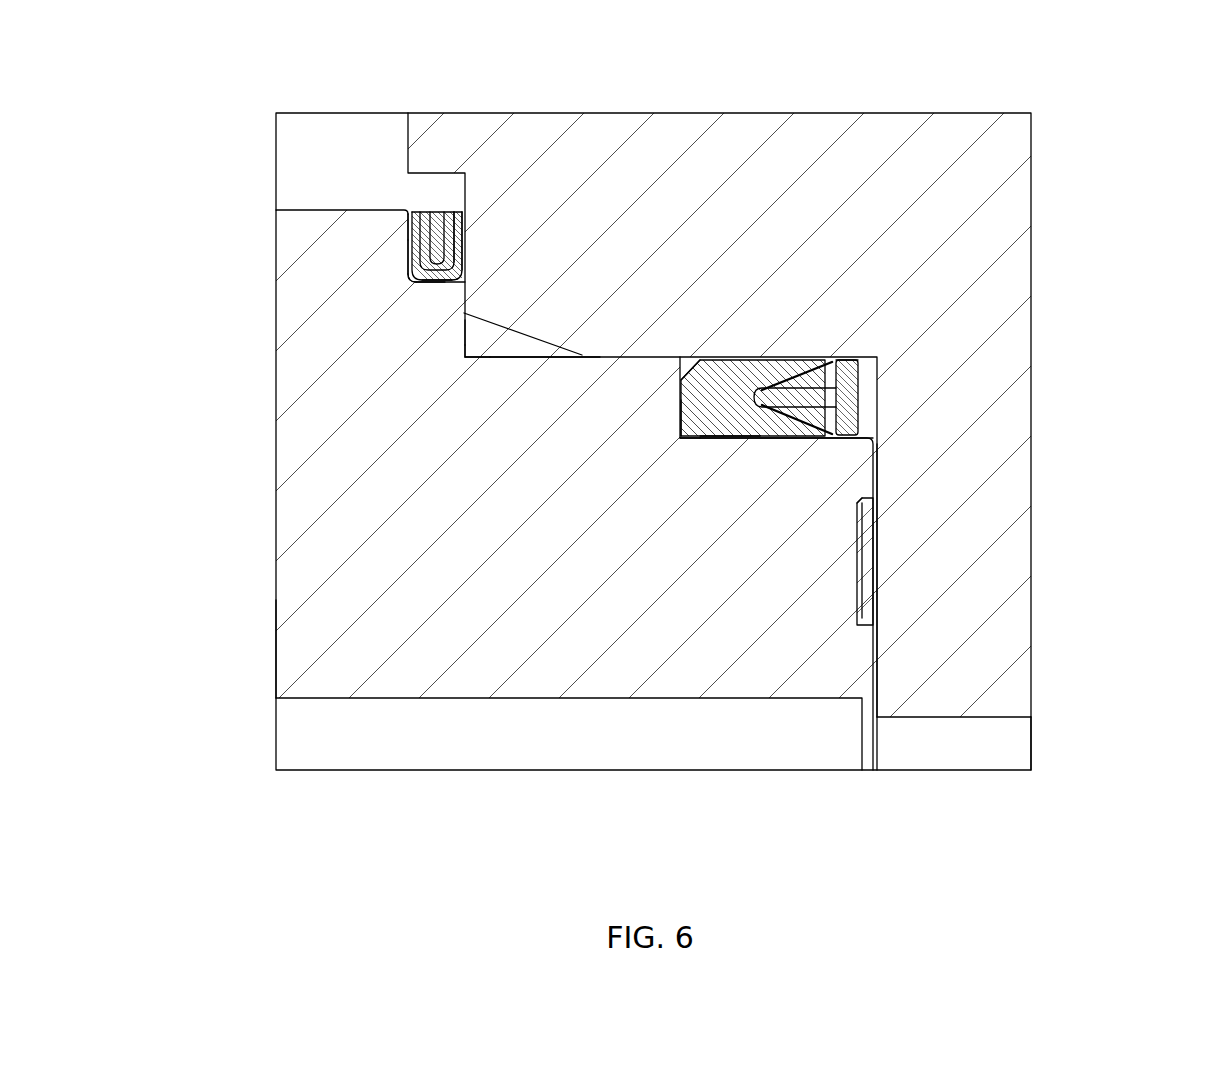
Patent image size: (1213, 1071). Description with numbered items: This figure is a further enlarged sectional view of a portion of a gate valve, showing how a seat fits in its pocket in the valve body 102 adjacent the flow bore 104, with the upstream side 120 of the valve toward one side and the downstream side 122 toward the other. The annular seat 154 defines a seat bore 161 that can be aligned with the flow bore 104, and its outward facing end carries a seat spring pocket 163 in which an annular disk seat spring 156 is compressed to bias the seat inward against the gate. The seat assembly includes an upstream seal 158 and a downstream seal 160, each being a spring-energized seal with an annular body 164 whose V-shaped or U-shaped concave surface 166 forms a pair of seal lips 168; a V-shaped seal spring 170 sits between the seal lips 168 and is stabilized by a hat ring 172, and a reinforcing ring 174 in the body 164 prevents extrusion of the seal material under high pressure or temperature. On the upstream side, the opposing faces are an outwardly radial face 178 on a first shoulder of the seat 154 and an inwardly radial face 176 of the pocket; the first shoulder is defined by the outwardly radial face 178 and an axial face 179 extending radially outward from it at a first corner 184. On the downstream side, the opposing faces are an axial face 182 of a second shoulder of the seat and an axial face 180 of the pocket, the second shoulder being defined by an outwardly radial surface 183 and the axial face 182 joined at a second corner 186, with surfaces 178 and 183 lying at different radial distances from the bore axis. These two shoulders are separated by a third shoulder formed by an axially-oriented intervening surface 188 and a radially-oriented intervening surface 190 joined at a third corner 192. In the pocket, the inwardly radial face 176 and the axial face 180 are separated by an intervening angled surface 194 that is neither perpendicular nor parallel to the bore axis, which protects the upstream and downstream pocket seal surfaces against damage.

The valve body 102 is at (1005, 597).
The flow bore 104 is at (965, 725).
The upstream side 120 is at (262, 185).
The downstream side 122 is at (1046, 743).
The seat 154 is at (310, 627).
The seat spring 156 is at (878, 545).
The upstream seal 158 is at (828, 268).
The downstream seal 160 is at (383, 282).
The seat bore 161 is at (715, 698).
The seat spring pocket 163 is at (857, 595).
The annular body 164 is at (466, 283).
The concave surface 166 is at (415, 185).
The seal lips 168 is at (466, 260).
The seal spring 170 is at (466, 232).
The hat ring 172 is at (435, 212).
The reinforcing ring 174 is at (682, 372).
The inwardly radial face of the pocket 176 is at (702, 357).
The outwardly radial face of the first shoulder 178 is at (715, 440).
The axial face of the first shoulder 179 is at (678, 420).
The axial face of the pocket 180 is at (466, 284).
The axial face of the second shoulder 182 is at (406, 234).
The outwardly radial surface of the second shoulder 183 is at (430, 283).
The first corner 184 is at (679, 440).
The second corner 186 is at (407, 278).
The axially-oriented intervening surface 188 is at (462, 333).
The radially-oriented intervening surface 190 is at (547, 356).
The third corner 192 is at (462, 358).
The intervening angled surface 194 is at (461, 360).